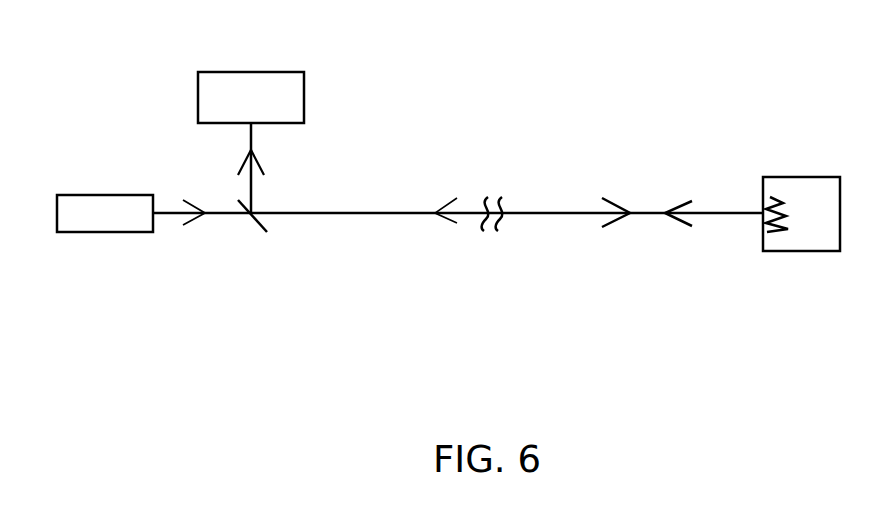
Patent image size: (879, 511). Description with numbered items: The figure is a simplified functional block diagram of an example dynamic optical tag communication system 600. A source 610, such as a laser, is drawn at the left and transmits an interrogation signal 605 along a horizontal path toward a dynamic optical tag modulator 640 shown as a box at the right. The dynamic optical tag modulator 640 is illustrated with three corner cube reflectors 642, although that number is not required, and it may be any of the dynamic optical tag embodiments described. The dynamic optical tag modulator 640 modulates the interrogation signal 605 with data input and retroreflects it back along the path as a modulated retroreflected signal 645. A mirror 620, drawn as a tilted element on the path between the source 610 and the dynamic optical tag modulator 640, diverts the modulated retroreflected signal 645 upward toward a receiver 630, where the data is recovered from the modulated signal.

The dynamic optical tag communication system 600 is at (92, 102).
The interrogation signal 605 is at (207, 217).
The source 610 is at (102, 232).
The mirror 620 is at (252, 235).
The receiver 630 is at (304, 92).
The dynamic optical tag modulator 640 is at (798, 252).
The corner cube reflectors 642 is at (775, 197).
The modulated retroreflected signal 645 is at (440, 200).